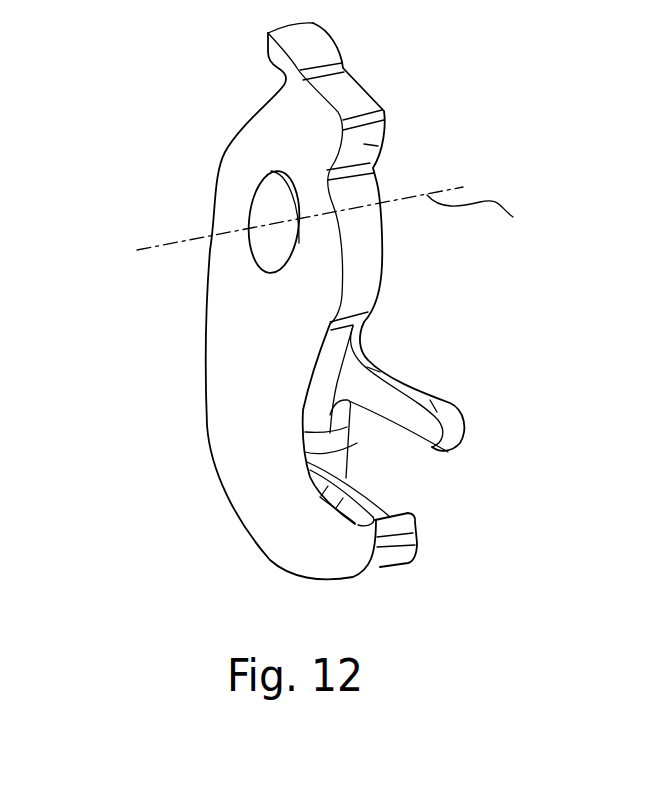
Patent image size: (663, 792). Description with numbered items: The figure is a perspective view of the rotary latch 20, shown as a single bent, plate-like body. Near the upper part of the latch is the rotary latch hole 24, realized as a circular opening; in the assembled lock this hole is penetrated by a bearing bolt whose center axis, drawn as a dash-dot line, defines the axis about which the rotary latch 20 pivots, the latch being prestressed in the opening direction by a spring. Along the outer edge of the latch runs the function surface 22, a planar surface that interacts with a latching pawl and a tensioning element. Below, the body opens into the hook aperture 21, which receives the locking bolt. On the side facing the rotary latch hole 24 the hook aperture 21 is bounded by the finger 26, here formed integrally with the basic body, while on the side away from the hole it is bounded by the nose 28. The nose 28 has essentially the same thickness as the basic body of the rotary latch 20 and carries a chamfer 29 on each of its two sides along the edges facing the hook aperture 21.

The rotary latch 20 is at (295, 334).
The hook aperture 21 is at (303, 450).
The function surface 22 is at (380, 141).
The rotary latch hole 24 is at (273, 238).
The finger 26 is at (435, 433).
The nose 28 is at (330, 557).
The chamfer 29 is at (325, 510).